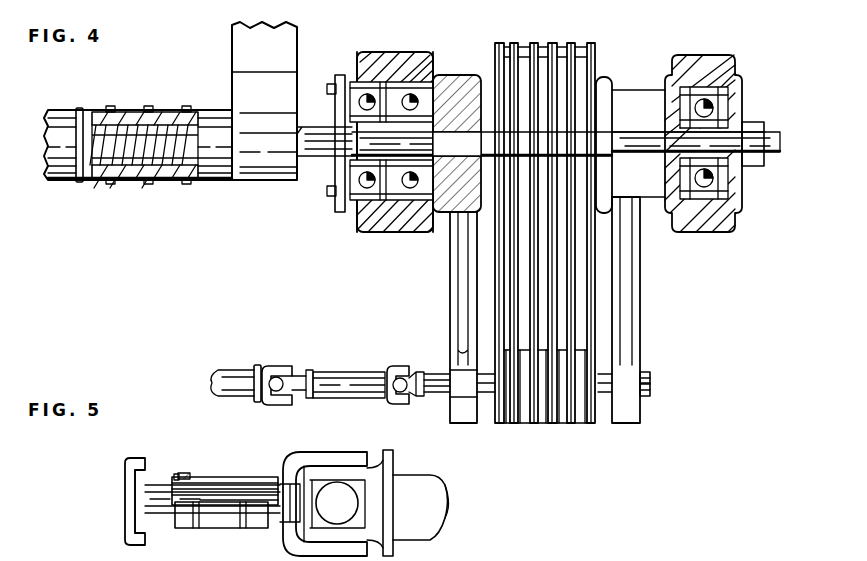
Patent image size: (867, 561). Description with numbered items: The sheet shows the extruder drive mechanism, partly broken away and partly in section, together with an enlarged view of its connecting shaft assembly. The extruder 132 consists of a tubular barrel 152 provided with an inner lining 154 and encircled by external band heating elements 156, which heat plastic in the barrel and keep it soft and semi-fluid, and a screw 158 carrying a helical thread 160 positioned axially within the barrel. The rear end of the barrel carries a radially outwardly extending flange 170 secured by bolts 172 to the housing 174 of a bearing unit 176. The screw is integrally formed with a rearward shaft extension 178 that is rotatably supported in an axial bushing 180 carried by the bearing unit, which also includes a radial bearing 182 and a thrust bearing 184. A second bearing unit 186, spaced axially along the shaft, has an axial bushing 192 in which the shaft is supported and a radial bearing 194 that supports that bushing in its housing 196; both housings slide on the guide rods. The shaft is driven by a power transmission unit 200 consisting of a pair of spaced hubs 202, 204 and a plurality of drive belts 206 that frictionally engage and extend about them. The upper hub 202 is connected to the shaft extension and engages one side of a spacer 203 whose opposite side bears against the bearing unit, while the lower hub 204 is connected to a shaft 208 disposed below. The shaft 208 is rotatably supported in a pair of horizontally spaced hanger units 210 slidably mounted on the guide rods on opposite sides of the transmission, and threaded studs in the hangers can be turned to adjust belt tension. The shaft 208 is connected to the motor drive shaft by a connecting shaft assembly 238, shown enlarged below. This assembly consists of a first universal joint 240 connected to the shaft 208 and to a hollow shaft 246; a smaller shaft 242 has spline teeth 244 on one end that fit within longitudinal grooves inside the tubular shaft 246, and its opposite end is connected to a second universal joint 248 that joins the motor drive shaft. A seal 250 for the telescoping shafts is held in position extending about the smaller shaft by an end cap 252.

In FIG. 4, the extruder 132 is at (166, 185).
In FIG. 4, the tubular barrel 152 is at (128, 118).
In FIG. 4, the inner lining 154 is at (103, 125).
In FIG. 4, the external band heating elements 156 is at (156, 118).
In FIG. 4, the screw 158 is at (140, 160).
In FIG. 4, the helical thread 160 is at (109, 160).
In FIG. 4, the rear flange 170 is at (340, 214).
In FIG. 4, the bolts 172 is at (327, 190).
In FIG. 4, the housing 174 is at (392, 235).
In FIG. 4, the bearing unit 176 is at (441, 60).
In FIG. 4, the shaft extension 178 is at (776, 152).
In FIG. 4, the axial bushing 180 is at (531, 141).
In FIG. 4, the radial bearing 182 is at (365, 98).
In FIG. 4, the thrust bearing 184 is at (405, 95).
In FIG. 4, the second bearing unit 186 is at (746, 57).
In FIG. 4, the axial bushing 192 is at (745, 122).
In FIG. 4, the radial bearing 194 is at (718, 190).
In FIG. 4, the housing 196 is at (705, 222).
In FIG. 4, the power transmission unit 200 is at (550, 436).
In FIG. 4, the hub 202 is at (602, 78).
In FIG. 4, the spacer 203 is at (462, 82).
In FIG. 4, the hub 204 is at (592, 426).
In FIG. 4, the drive belts 206 is at (600, 320).
In FIG. 4, the shaft 208 is at (652, 382).
In FIG. 5, the shaft 208 is at (438, 521).
In FIG. 4, the hanger units 210 is at (454, 409).
In FIG. 5, the connecting shaft assembly 238 is at (231, 534).
In FIG. 4, the first universal joint 240 is at (400, 366).
In FIG. 5, the first universal joint 240 is at (330, 462).
In FIG. 5, the smaller shaft 242 is at (196, 486).
In FIG. 5, the spline teeth 244 is at (252, 485).
In FIG. 4, the hollow shaft 246 is at (349, 378).
In FIG. 5, the hollow shaft 246 is at (208, 520).
In FIG. 4, the second universal joint 248 is at (298, 342).
In FIG. 5, the second universal joint 248 is at (130, 500).
In FIG. 5, the seal 250 is at (182, 473).
In FIG. 5, the end cap 252 is at (175, 476).